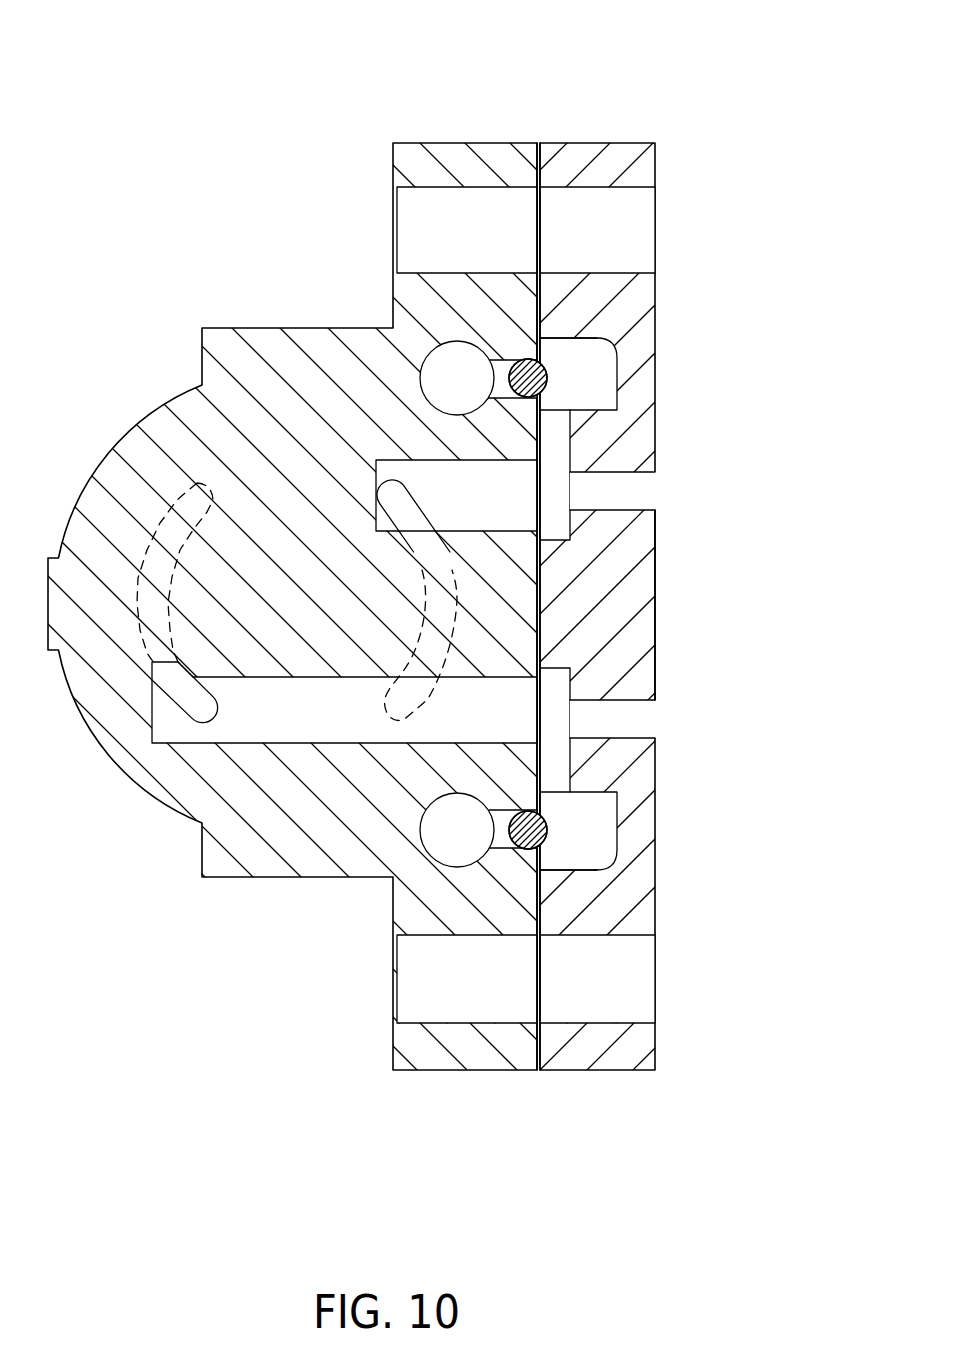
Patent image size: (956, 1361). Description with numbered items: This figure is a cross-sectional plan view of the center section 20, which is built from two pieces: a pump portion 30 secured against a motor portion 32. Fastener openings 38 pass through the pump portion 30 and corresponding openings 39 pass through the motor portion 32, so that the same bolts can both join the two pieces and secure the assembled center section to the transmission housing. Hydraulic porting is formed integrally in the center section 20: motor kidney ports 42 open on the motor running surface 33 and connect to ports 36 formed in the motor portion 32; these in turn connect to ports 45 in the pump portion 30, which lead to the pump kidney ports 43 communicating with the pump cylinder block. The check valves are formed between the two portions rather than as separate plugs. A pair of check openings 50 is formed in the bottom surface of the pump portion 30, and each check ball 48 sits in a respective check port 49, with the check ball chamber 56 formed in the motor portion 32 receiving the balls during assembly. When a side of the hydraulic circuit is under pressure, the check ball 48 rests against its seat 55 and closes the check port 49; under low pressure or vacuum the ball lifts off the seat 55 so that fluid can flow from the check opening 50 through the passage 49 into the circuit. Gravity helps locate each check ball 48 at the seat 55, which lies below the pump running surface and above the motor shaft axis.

The center section 20 is at (83, 73).
The pump portion 30 is at (465, 143).
The motor portion 32 is at (597, 143).
The motor running surface 33 is at (657, 626).
The ports 36 is at (557, 685).
The openings 38 is at (452, 242).
The openings 39 is at (612, 242).
The motor kidney ports 42 is at (632, 492).
The pump kidney ports 43 is at (412, 512).
The ports 45 is at (489, 523).
The check ball 48 is at (542, 378).
The check port 49 is at (503, 360).
The check openings 50 is at (440, 384).
The seat 55 is at (525, 398).
The check ball chamber 56 is at (598, 367).